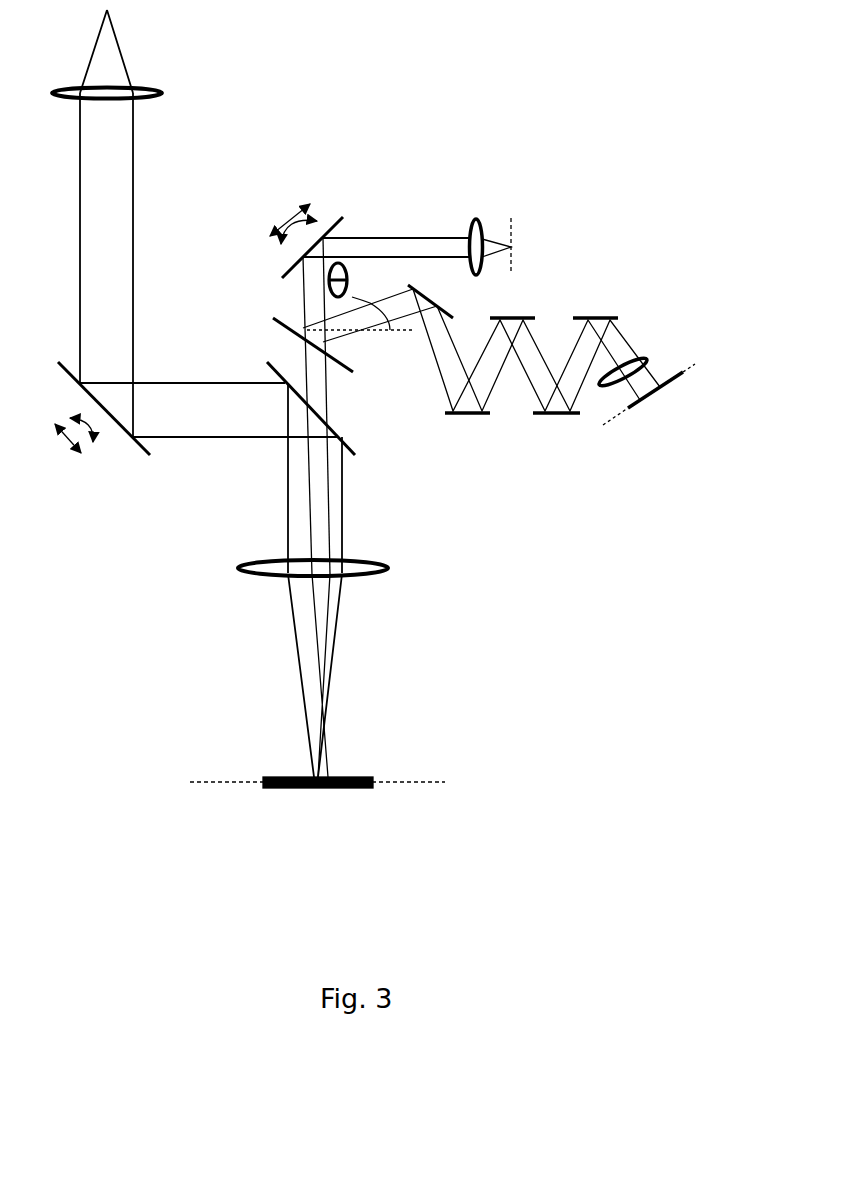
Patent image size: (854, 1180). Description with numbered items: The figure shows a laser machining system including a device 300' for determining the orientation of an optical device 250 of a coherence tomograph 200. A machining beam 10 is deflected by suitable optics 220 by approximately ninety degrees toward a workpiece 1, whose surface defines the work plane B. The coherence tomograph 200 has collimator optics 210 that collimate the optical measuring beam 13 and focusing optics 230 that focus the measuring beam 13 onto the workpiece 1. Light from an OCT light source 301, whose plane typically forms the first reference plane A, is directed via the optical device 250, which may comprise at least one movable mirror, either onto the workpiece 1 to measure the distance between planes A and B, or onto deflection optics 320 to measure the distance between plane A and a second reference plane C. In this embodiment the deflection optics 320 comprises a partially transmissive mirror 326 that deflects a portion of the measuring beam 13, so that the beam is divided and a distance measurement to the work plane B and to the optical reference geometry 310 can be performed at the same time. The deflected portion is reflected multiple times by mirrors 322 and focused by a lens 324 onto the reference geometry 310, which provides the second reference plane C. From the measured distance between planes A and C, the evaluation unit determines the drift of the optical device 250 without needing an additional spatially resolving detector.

The workpiece 1 is at (370, 768).
The machining beam 10 is at (292, 672).
The optical measuring beam 13 is at (423, 233).
The coherence tomograph 200 is at (605, 211).
The collimator optics 210 is at (162, 94).
The optics 220 is at (113, 480).
The focusing optics 230 is at (388, 567).
The optical device 250 is at (287, 202).
The device for determining an orientation of an optical device 300' is at (644, 572).
The OCT light source 301 is at (522, 250).
The optical reference geometry 310 is at (657, 398).
The deflection optics 320 is at (505, 471).
The mirrors 322 is at (447, 415).
The lens 324 is at (635, 360).
The partially transmissive mirror 326 is at (277, 333).
The first reference plane A is at (536, 206).
The work plane B is at (285, 776).
The second reference plane C is at (575, 457).